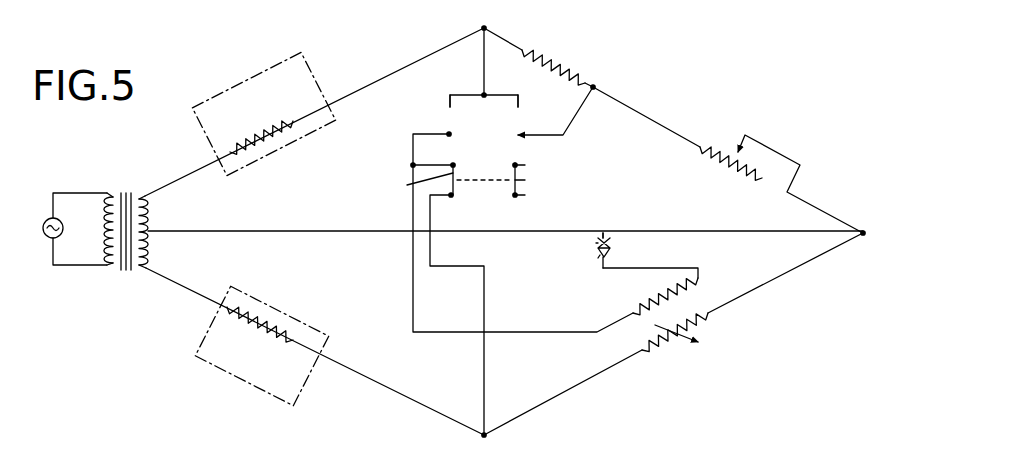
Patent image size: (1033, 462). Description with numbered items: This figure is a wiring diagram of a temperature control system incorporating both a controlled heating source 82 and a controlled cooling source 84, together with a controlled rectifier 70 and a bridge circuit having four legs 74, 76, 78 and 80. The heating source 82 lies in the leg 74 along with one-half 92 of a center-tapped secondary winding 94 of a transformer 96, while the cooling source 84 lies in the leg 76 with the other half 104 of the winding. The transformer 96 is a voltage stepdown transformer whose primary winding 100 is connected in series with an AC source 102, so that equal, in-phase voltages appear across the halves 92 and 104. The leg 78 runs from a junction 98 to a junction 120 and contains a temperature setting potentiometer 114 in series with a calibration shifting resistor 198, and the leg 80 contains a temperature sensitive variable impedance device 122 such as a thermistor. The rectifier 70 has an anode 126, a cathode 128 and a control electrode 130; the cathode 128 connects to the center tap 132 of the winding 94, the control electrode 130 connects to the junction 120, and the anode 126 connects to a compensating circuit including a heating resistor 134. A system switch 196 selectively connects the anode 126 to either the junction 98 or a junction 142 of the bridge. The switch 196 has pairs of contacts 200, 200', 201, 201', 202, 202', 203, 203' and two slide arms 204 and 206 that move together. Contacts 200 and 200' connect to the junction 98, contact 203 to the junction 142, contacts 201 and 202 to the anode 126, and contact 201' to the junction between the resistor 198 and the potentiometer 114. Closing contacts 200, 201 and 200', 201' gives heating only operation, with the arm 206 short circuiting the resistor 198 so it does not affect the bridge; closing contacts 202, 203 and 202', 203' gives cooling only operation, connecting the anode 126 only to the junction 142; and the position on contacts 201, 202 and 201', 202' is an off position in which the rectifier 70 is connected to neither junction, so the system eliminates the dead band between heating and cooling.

The controlled rectifier 70 is at (614, 250).
The leg 74 is at (341, 99).
The leg 76 is at (357, 371).
The leg 78 is at (669, 126).
The leg 80 is at (748, 300).
The controlled heating source 82 is at (283, 155).
The controlled cooling source 84 is at (302, 316).
The one-half of secondary winding 92 is at (148, 203).
The center-tapped secondary winding 94 is at (126, 272).
The transformer 96 is at (127, 190).
The junction 98 is at (486, 27).
The primary winding 100 is at (102, 203).
The AC source 102 is at (49, 254).
The half of secondary winding 104 is at (149, 264).
The temperature setting potentiometer 114 is at (746, 136).
The junction 120 is at (865, 231).
The temperature sensitive variable impedance device 122 is at (656, 347).
The anode 126 is at (599, 255).
The cathode 128 is at (595, 244).
The control electrode 130 is at (605, 238).
The center tap 132 is at (152, 232).
The heating resistor 134 is at (688, 291).
The junction 142 is at (486, 437).
The system switch 196 is at (437, 114).
The calibration shifting resistor 198 is at (565, 57).
The contact 200 is at (440, 87).
The contact 200' is at (522, 89).
The contact 201 is at (523, 221).
The contact 201' is at (555, 111).
The contact 202 is at (448, 166).
The contact 202' is at (548, 164).
The contact 203 is at (457, 314).
The contact 203' is at (547, 195).
The slide arm 204 is at (408, 184).
The slide arm 206 is at (525, 180).